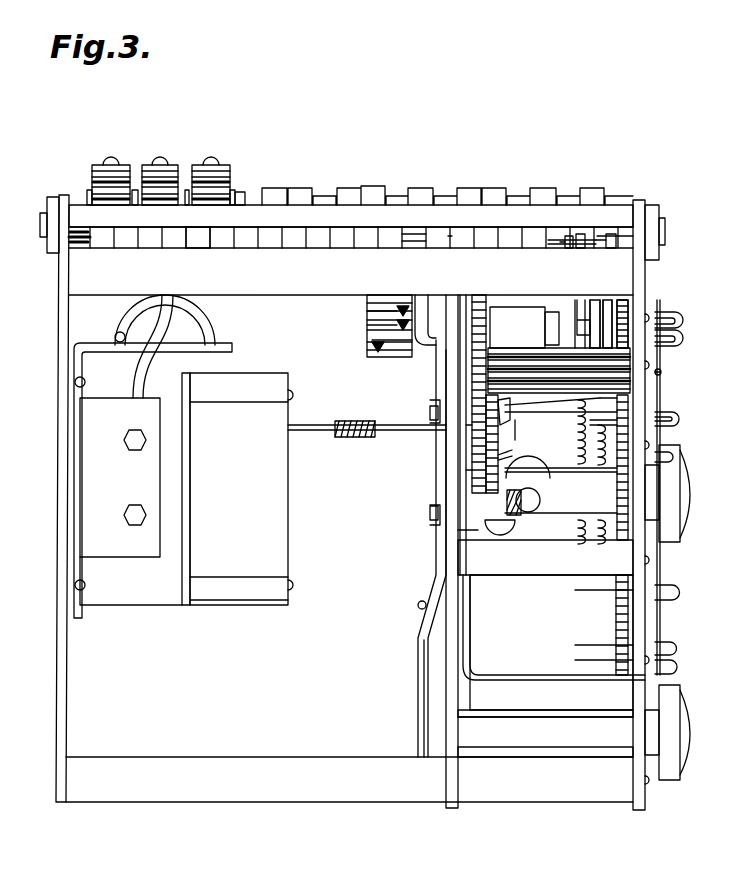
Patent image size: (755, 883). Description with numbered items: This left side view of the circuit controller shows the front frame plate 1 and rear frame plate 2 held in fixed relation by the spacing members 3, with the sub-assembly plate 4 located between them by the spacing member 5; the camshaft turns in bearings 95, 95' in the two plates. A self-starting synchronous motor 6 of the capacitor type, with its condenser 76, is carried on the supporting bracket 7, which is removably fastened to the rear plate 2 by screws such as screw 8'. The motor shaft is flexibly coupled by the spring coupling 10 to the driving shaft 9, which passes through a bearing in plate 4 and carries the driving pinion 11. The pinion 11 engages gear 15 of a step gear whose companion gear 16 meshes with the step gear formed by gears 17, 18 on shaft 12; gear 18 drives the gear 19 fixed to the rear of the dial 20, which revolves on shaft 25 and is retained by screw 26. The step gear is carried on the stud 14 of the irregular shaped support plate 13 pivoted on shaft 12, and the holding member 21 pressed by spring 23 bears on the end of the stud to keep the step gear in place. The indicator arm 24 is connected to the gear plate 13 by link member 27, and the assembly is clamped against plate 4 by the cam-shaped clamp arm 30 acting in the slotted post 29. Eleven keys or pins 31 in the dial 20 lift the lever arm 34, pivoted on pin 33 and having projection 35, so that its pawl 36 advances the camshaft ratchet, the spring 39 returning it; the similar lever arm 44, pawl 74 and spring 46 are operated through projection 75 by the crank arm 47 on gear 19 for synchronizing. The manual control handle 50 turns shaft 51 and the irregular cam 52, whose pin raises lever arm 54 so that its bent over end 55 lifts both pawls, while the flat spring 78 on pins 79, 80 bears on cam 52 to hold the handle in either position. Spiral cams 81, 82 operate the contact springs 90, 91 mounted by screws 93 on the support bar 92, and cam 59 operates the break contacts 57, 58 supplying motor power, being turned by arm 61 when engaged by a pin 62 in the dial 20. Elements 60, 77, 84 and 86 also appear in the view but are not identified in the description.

The front frame plate 1 is at (646, 302).
The rear frame plate 2 is at (59, 262).
The spacing members 3 is at (512, 245).
The sub-assembly plate 4 is at (455, 228).
The spacing member 5 is at (555, 240).
The motor 6 is at (243, 373).
The supporting bracket 7 is at (88, 342).
The screw 8' is at (100, 491).
The driving shaft 9 is at (445, 432).
The spring coupling 10 is at (342, 421).
The driving pinion 11 is at (480, 410).
The shaft 12 is at (662, 372).
The support plate 13 is at (470, 478).
The stud 14 is at (520, 468).
The gear wheel 15 is at (540, 492).
The gear wheel 16 is at (480, 470).
The step gear wheel 17 is at (497, 300).
The gear 18 is at (520, 347).
The gear 19 is at (616, 640).
The dial 20 is at (661, 630).
The holding member 21 is at (520, 483).
The spring 23 is at (540, 503).
The indicator arm 24 is at (520, 680).
The shaft 25 is at (578, 445).
The screw 26 is at (676, 543).
The link member 27 is at (470, 530).
The slotted post 29 is at (516, 426).
The clamp arm 30 is at (512, 532).
The keys or pins 31 is at (684, 322).
The pin 33 is at (565, 244).
The lever arm 34 is at (609, 248).
The projection 35 is at (606, 300).
The pawl 36 is at (621, 300).
The spring 39 is at (590, 540).
The lever arm 44 is at (580, 248).
The spring 46 is at (578, 520).
The crank arm 47 is at (575, 424).
The manual control handle 50 is at (680, 708).
The shaft 51 is at (580, 717).
The cam 52 is at (420, 724).
The lever arm 54 is at (448, 468).
The bent over end 55 is at (540, 404).
The break contact 57 is at (395, 326).
The break contact 58 is at (395, 312).
The cam 59 is at (436, 296).
The contact 60 is at (418, 296).
The arm 61 is at (542, 346).
The pin 62 is at (674, 413).
The pawl 74 is at (593, 300).
The projection 75 is at (578, 300).
The condenser 76 is at (210, 315).
The stop 77 is at (430, 413).
The flat spring 78 is at (418, 677).
The pin 79 is at (418, 604).
The pin 80 is at (468, 642).
The spiral cam 81 is at (216, 250).
The spiral cam 82 is at (201, 250).
The bar 84 is at (572, 238).
The plate 86 is at (132, 558).
The contact spring 90 is at (232, 174).
The contact spring 91 is at (245, 192).
The support bar 92 is at (615, 207).
The screws 93 is at (216, 162).
The bearing 95 is at (674, 232).
The bearing 95' is at (34, 225).